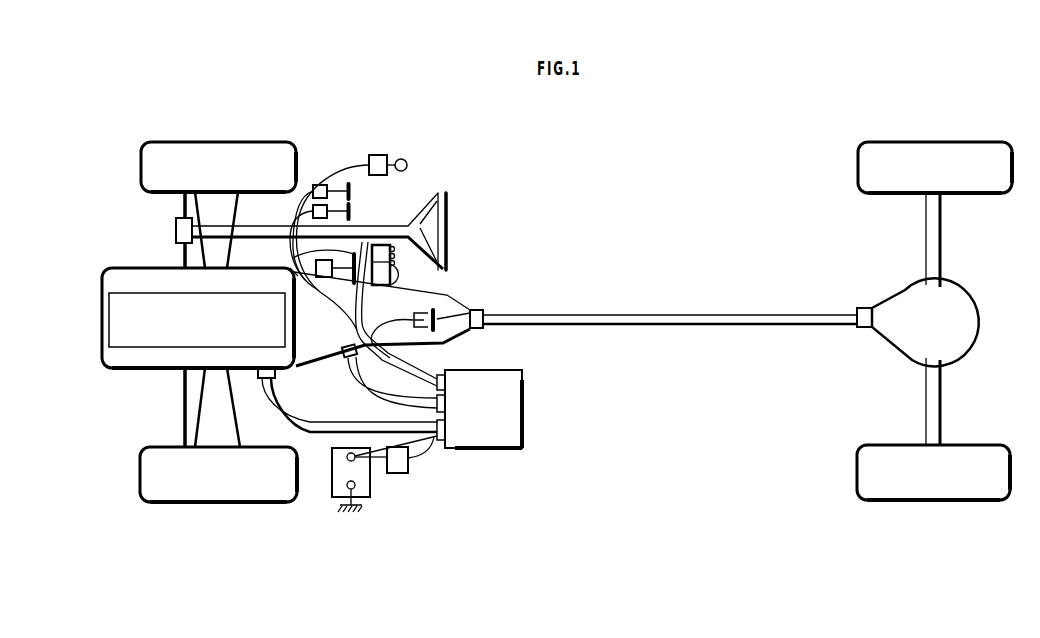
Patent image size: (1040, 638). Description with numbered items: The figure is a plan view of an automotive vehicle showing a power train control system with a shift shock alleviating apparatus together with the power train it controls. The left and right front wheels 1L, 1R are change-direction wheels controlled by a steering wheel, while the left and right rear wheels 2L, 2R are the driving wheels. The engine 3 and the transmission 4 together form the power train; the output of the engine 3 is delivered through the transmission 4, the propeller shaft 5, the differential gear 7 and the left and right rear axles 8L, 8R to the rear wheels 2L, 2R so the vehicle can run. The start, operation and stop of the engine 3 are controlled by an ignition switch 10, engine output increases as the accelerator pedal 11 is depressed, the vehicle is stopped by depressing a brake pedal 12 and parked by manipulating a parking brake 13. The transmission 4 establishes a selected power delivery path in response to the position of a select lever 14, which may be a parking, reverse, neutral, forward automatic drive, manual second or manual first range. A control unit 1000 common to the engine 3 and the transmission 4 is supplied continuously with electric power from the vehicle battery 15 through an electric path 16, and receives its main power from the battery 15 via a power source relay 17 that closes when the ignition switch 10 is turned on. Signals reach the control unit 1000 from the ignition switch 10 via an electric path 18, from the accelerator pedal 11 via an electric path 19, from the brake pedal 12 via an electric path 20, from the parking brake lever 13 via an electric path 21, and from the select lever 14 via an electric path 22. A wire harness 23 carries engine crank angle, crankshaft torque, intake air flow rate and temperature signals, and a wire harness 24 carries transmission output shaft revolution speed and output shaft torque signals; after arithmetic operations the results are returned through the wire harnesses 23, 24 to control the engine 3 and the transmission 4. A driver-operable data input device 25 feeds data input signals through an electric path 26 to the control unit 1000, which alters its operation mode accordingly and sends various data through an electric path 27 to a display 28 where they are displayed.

The right front wheel 1R is at (175, 142).
The left front wheel 1L is at (163, 503).
The right rear wheel 2R is at (990, 142).
The left rear wheel 2L is at (985, 503).
The engine 3 is at (130, 370).
The transmission 4 is at (318, 358).
The propeller shaft 5 is at (737, 314).
The differential gear 7 is at (980, 332).
The right rear axle 8R is at (942, 256).
The left rear axle 8L is at (942, 398).
The ignition switch 10 is at (385, 156).
The accelerator pedal 11 is at (352, 191).
The brake pedal 12 is at (352, 211).
The parking brake 13 is at (316, 262).
The select lever 14 is at (472, 310).
The vehicle battery 15 is at (332, 473).
The electric path 16 is at (400, 434).
The power source relay 17 is at (398, 474).
The electric path 18 is at (350, 165).
The electric path 19 is at (298, 195).
The electric path 20 is at (300, 216).
The electric path 21 is at (293, 272).
The electric path 22 is at (440, 330).
The wire harness 23 is at (290, 405).
The wire harness 24 is at (370, 392).
The data input device 25 is at (395, 258).
The electric path 26 is at (362, 300).
The electric path 27 is at (400, 340).
The display 28 is at (390, 277).
The control unit 1000 is at (524, 412).